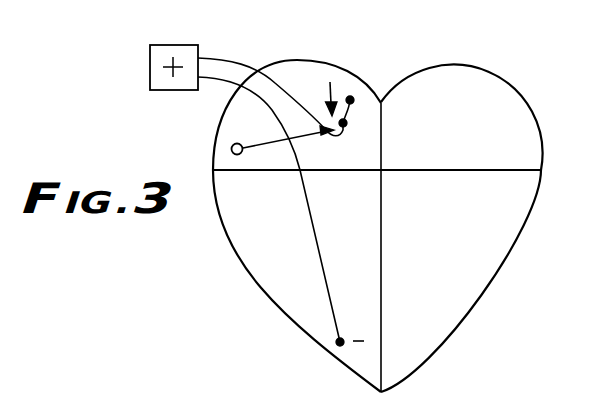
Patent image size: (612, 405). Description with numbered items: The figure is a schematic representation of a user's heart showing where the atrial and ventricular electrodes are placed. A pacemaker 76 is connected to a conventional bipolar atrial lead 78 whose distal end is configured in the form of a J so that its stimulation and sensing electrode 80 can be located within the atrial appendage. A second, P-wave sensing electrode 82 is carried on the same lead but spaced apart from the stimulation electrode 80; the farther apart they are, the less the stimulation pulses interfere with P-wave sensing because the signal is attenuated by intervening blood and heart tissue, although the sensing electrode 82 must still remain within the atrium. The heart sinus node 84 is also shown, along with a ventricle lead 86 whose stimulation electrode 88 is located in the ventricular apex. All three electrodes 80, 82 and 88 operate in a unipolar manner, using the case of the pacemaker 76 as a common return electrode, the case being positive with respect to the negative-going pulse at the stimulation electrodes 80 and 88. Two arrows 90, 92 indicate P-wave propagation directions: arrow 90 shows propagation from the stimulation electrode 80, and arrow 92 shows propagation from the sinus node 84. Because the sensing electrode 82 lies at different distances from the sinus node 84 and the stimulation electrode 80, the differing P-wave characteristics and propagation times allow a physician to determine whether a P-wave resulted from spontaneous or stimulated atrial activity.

The pacemaker 76 is at (192, 44).
The atrial lead 78 is at (227, 58).
The stimulation and sensing electrode 80 is at (350, 100).
The P-wave sensing electrode 82 is at (343, 123).
The heart sinus node 84 is at (232, 147).
The ventricle lead 86 is at (313, 227).
The stimulation electrode 88 is at (336, 342).
The arrow 90 is at (330, 83).
The arrow 92 is at (269, 140).